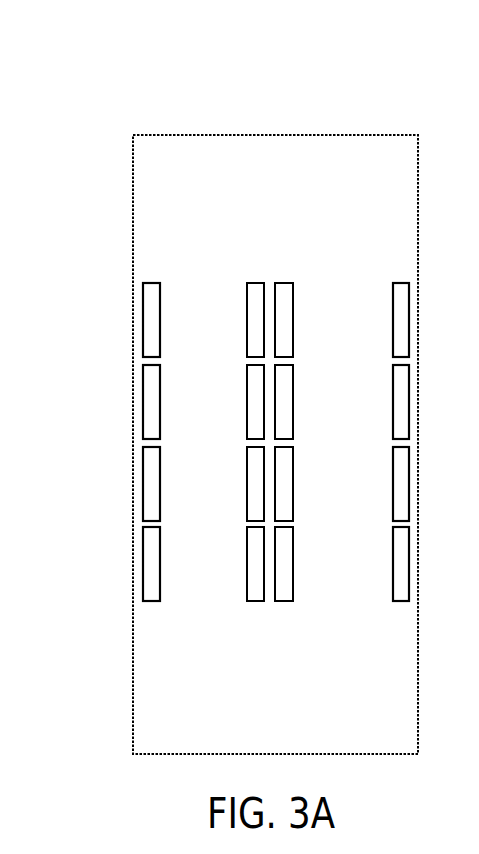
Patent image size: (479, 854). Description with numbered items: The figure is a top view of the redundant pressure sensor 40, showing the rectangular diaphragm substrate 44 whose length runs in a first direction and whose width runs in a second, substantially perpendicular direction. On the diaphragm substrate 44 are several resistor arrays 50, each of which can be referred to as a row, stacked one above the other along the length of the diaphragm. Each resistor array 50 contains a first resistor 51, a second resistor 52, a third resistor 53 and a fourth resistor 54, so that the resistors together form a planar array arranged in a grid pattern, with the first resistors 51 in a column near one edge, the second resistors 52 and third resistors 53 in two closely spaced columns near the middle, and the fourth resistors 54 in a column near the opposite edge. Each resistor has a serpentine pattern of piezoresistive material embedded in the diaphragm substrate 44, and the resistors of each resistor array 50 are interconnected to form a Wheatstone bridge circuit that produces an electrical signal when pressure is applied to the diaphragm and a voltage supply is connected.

The redundant pressure sensor 40 is at (168, 86).
The diaphragm substrate 44 is at (318, 133).
The resistor arrays 50 is at (112, 308).
The first resistors 51 is at (147, 283).
The second resistors 52 is at (253, 283).
The third resistors 53 is at (282, 283).
The fourth resistors 54 is at (402, 283).